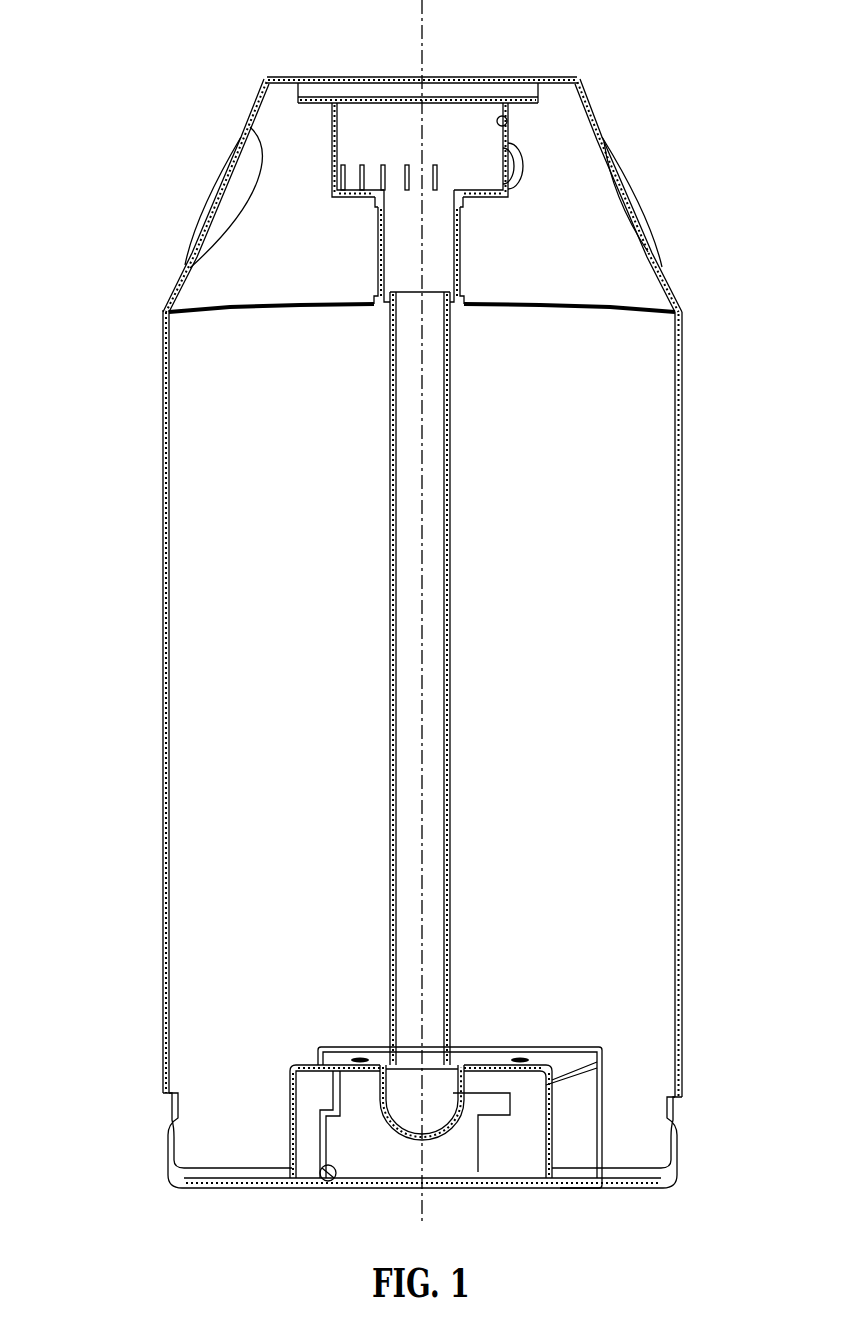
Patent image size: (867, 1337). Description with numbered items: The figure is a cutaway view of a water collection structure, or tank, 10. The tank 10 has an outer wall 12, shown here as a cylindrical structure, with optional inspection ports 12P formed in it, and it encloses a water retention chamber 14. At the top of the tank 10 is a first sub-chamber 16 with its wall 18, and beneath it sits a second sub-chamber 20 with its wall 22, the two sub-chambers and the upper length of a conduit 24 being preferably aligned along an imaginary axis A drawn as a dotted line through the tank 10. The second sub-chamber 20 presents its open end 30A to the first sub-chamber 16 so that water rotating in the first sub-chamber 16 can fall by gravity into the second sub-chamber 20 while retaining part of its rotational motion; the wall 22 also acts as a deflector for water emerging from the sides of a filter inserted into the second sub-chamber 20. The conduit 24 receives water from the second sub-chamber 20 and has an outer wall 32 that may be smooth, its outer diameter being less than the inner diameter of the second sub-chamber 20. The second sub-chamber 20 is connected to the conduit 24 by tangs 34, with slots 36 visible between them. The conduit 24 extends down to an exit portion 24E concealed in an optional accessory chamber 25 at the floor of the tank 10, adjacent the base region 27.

The water collection structure 10 is at (103, 29).
The axis A is at (407, 29).
The outer wall 12 is at (163, 713).
The inspection ports 12P is at (716, 150).
The water retention chamber 14 is at (266, 638).
The first sub-chamber 16 is at (371, 129).
The wall 18 is at (507, 124).
The second sub-chamber 20 is at (395, 260).
The wall 22 is at (460, 258).
The conduit 24 is at (452, 637).
The exit portion 24E is at (460, 1127).
The accessory chamber 25 is at (290, 1108).
The bottom tray 27 is at (612, 1182).
The open end 30A is at (452, 185).
The outer wall 32 is at (455, 330).
The tangs 34 is at (385, 308).
The slots 36 is at (455, 312).